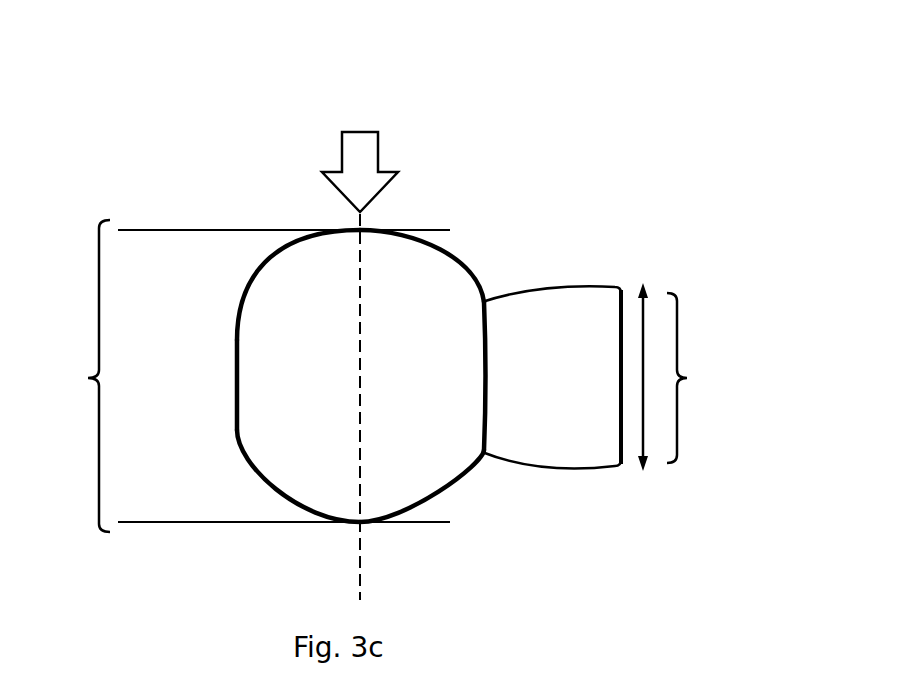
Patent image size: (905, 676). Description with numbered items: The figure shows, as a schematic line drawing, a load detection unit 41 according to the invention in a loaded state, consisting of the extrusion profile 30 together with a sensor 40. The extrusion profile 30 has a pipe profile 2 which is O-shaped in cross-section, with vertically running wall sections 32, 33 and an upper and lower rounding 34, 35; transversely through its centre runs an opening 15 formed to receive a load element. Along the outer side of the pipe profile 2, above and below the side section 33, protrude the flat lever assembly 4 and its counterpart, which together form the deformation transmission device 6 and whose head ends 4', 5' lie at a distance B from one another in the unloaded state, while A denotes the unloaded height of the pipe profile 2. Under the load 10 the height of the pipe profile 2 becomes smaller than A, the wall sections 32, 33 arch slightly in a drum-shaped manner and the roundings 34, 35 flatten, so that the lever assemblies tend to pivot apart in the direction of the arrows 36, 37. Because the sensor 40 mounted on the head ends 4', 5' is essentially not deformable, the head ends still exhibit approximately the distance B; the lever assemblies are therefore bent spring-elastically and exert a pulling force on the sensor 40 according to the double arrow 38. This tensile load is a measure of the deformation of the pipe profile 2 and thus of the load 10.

The pipe profile 2 is at (477, 122).
The lever assembly 4 is at (551, 345).
The head end of lever assembly 4' is at (659, 236).
The head end of lever assembly 5' is at (659, 519).
The deformation transmission device 6 is at (603, 141).
The load 10 is at (352, 185).
The opening 15 is at (363, 577).
The extrusion profile 30 is at (607, 56).
The vertical wall section 32 is at (237, 370).
The vertical wall section 33 is at (481, 377).
The upper rounding 34 is at (447, 255).
The lower rounding 35 is at (452, 490).
The arrow 36 is at (496, 262).
The arrow 37 is at (501, 477).
The double arrow 38 is at (647, 425).
The sensor 40 is at (618, 383).
The load detection unit 41 is at (162, 131).
The height of the pipe profile A is at (244, 376).
The distance between the head ends B is at (695, 378).